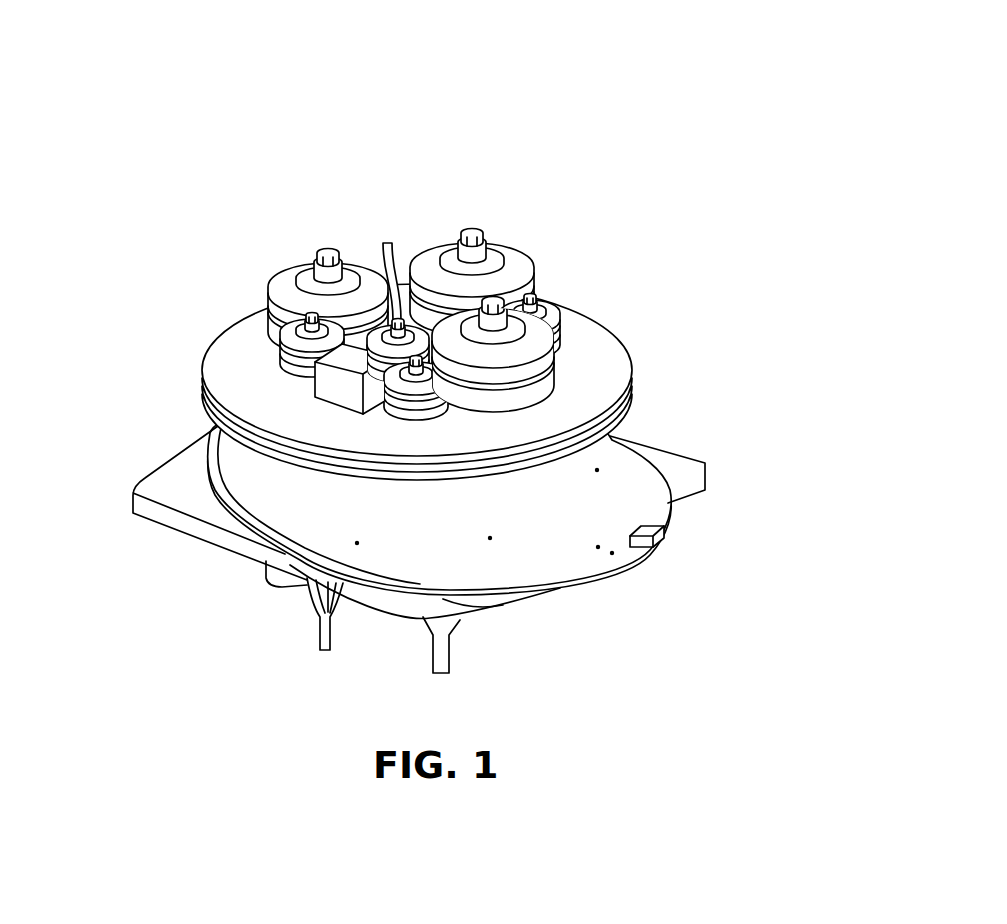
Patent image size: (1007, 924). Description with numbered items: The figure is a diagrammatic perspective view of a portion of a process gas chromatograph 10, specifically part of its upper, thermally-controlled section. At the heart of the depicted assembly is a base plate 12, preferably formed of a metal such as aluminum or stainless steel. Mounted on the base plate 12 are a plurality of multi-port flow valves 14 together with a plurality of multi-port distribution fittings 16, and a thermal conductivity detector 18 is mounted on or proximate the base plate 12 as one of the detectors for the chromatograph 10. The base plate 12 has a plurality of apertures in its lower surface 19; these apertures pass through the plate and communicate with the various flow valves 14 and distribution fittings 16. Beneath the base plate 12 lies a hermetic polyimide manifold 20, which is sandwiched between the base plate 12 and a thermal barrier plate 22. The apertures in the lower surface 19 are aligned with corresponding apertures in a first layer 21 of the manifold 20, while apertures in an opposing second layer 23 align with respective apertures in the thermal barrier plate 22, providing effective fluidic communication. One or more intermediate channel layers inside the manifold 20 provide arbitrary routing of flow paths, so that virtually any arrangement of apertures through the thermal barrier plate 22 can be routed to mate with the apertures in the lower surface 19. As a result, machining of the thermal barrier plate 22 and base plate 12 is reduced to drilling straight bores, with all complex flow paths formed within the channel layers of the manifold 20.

The process gas chromatograph 10 is at (686, 78).
The base plate 12 is at (613, 343).
The multi-port flow valves 14 is at (267, 282).
The multi-port distribution fittings 16 is at (552, 300).
The thermal conductivity detector 18 is at (327, 387).
The lower surface 19 is at (200, 397).
The hermetic polyimide manifold 20 is at (637, 572).
The first layer 21 is at (608, 528).
The thermal barrier plate 22 is at (707, 470).
The second layer 23 is at (583, 592).